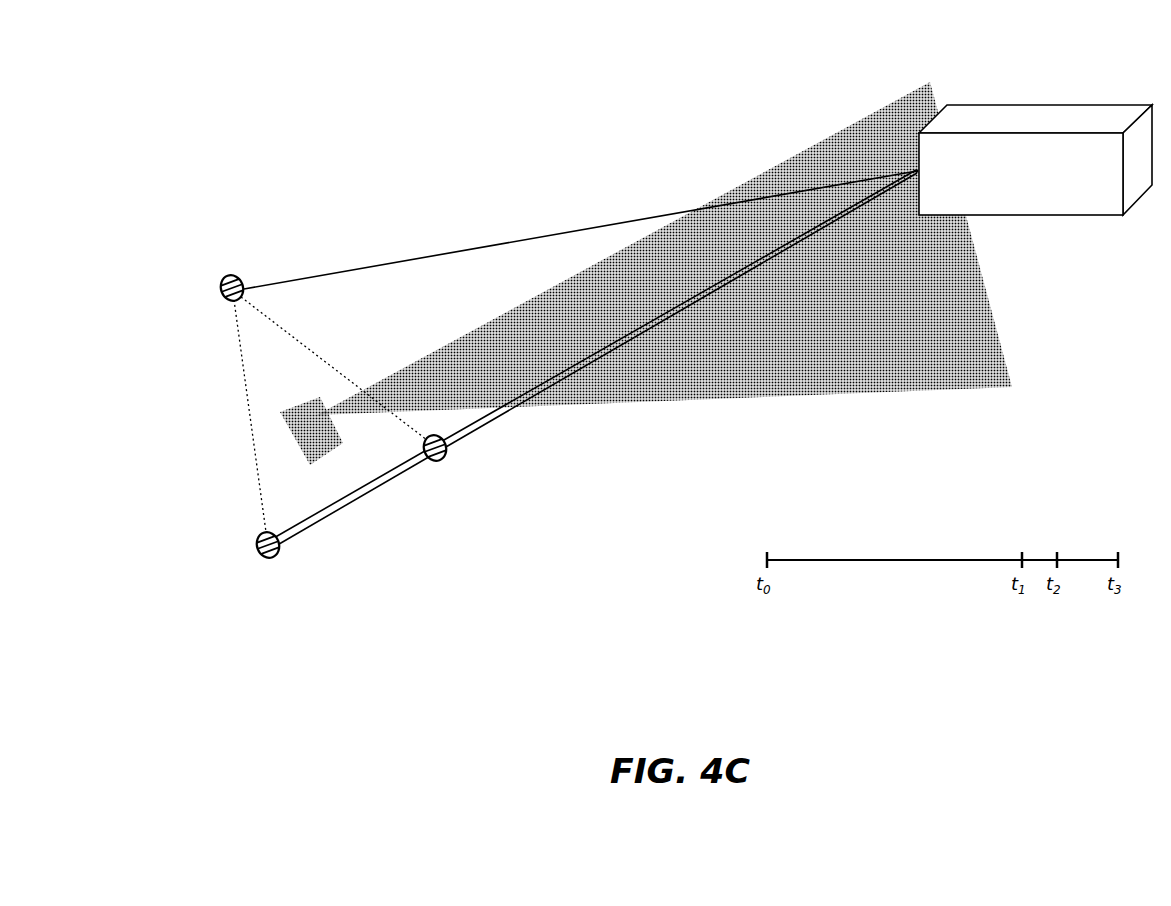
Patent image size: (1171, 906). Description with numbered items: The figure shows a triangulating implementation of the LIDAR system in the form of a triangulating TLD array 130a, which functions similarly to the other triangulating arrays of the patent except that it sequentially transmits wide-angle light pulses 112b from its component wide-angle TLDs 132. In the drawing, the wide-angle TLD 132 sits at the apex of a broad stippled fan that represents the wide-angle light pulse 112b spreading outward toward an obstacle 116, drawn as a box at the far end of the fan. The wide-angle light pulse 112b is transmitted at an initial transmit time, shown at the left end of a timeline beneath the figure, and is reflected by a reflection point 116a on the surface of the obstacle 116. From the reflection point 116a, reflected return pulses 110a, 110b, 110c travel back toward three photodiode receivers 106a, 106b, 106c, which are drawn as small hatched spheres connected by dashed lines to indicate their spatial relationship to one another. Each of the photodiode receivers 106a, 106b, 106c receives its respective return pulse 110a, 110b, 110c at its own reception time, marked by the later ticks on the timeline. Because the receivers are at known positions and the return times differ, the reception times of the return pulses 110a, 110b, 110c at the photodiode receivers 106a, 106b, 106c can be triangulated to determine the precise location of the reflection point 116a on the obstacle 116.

The triangulating TLD array 130a is at (245, 102).
The obstacle 116 is at (1032, 112).
The reflection point 116a is at (892, 167).
The wide-angle light pulse 112b is at (890, 367).
The wide-angle TLD 132 is at (313, 417).
The photodiode receiver 106a is at (443, 462).
The photodiode receiver 106b is at (228, 274).
The photodiode receiver 106c is at (250, 547).
The reflected return pulse 110a is at (538, 380).
The reflected return pulse 110b is at (552, 233).
The reflected return pulse 110c is at (347, 510).